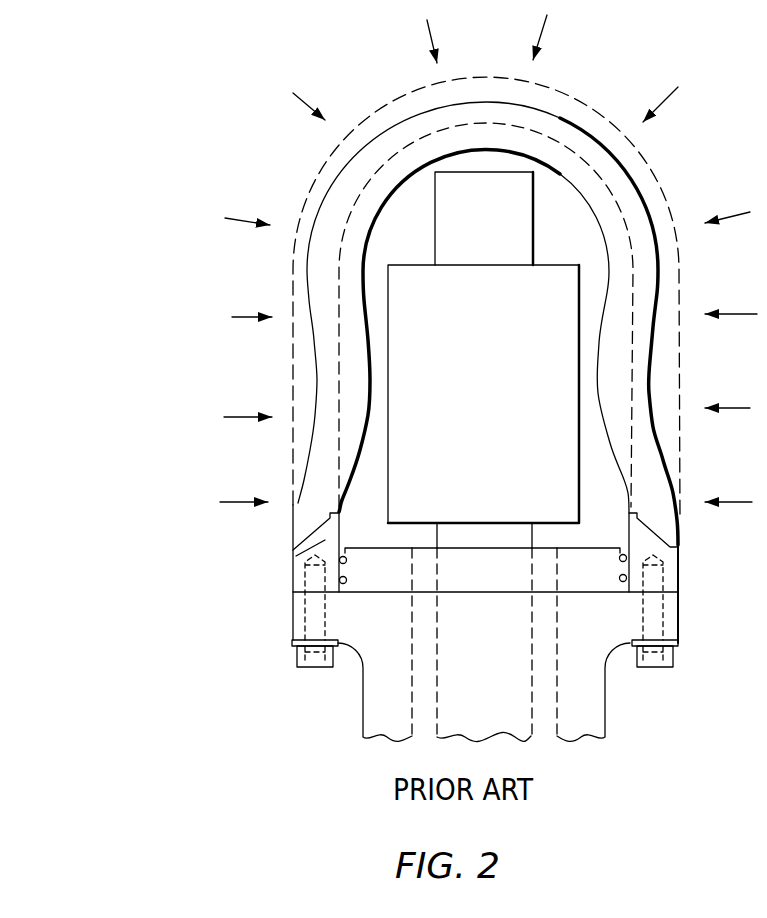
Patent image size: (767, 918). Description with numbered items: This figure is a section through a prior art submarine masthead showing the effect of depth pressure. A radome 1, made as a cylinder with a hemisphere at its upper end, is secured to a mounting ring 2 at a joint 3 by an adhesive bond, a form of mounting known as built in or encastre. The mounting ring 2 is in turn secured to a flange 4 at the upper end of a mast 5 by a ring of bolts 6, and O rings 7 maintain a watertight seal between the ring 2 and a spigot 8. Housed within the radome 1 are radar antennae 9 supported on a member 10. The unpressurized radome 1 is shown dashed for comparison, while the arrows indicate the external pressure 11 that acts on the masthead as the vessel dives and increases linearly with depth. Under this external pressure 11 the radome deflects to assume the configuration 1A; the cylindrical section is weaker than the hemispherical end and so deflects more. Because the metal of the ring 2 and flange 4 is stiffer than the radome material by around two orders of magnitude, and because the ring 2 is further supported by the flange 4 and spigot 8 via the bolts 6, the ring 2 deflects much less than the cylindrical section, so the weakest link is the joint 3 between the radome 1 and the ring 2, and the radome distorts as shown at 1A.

The radome 1 is at (292, 356).
The deflected radome configuration 1A is at (317, 383).
The mounting ring 2 is at (323, 541).
The joint 3 is at (313, 531).
The flange 4 is at (300, 605).
The mast 5 is at (378, 701).
The bolts 6 is at (300, 653).
The O rings 7 is at (347, 560).
The spigot 8 is at (377, 557).
The radar antennae 9 is at (448, 237).
The member 10 is at (458, 725).
The external pressure 11 is at (304, 110).